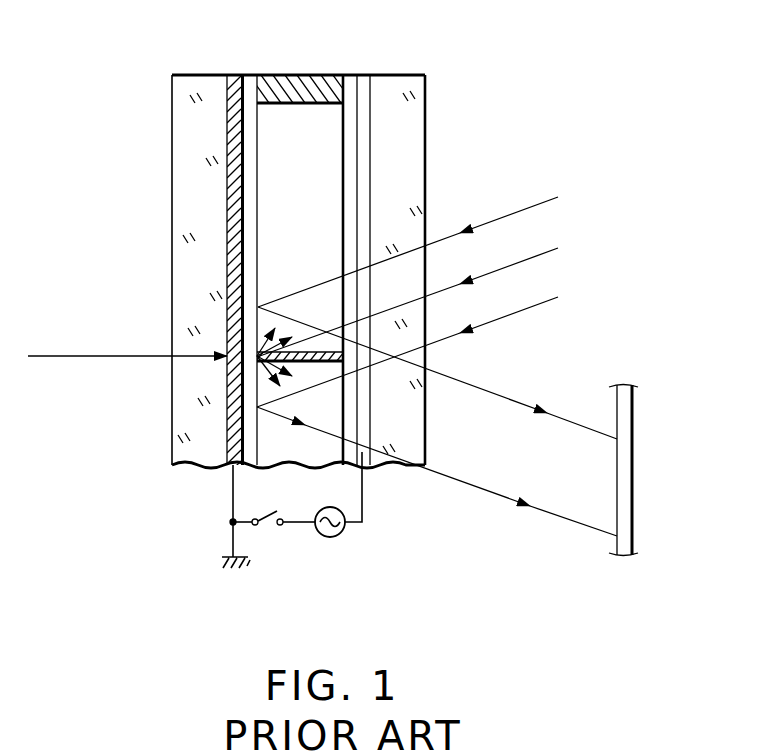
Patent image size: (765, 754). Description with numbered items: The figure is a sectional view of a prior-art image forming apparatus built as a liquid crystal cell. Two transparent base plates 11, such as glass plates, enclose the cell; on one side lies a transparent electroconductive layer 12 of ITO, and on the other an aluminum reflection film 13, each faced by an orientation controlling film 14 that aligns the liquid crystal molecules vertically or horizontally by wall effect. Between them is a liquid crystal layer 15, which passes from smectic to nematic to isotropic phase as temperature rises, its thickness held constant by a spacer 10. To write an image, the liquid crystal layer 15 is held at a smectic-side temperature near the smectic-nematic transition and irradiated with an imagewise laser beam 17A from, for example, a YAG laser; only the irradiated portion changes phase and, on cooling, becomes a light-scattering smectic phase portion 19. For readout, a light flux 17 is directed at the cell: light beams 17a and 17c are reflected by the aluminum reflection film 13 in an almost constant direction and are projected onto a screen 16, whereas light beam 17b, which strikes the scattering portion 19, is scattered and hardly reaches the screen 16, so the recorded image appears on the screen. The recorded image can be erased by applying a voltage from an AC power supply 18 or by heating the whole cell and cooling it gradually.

The spacer 10 is at (312, 80).
The transparent base plates 11 is at (194, 85).
The transparent electroconductive layer 12 is at (363, 85).
The aluminum reflection film 13 is at (241, 80).
The orientation controlling film 14 is at (248, 197).
The liquid crystal layer 15 is at (257, 270).
The screen 16 is at (632, 494).
The readout light flux 17 is at (461, 354).
The light beam 17a is at (437, 309).
The light beam 17b is at (435, 295).
The light beam 17c is at (437, 410).
The imagewise laser beam 17A is at (80, 358).
The AC power supply 18 is at (330, 537).
The light-scattering smectic phase portion 19 is at (343, 357).